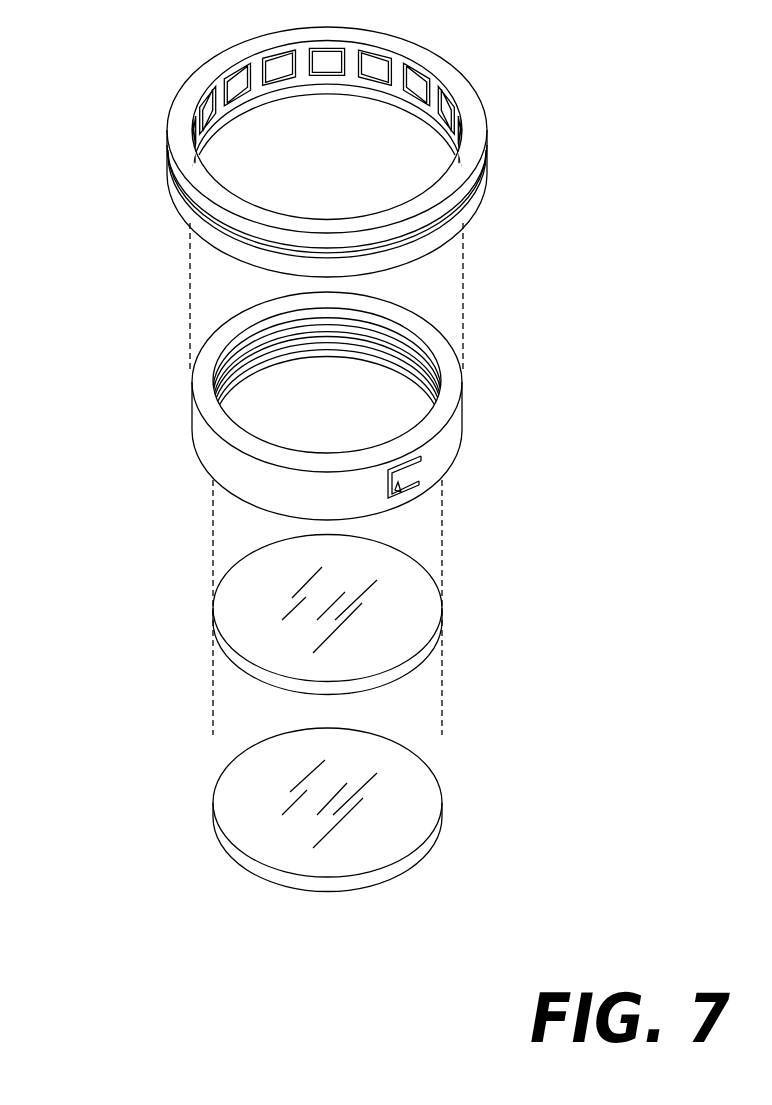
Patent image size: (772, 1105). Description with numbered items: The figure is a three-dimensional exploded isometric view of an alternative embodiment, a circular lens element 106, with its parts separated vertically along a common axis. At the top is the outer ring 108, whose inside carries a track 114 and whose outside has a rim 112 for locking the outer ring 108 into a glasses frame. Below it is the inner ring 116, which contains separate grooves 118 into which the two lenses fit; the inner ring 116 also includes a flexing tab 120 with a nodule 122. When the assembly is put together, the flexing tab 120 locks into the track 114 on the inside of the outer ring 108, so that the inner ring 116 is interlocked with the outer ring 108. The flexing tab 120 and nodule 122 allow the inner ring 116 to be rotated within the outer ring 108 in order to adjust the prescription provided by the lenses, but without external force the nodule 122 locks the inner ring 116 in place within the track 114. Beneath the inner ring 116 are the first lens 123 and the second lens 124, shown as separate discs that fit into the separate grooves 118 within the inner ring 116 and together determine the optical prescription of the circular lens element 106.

The circular lens element 106 is at (112, 88).
The outer ring 108 is at (458, 66).
The rim 112 is at (473, 167).
The track 114 is at (420, 88).
The inner ring 116 is at (465, 403).
The grooves 118 is at (380, 352).
The flexing tab 120 is at (405, 478).
The nodule 122 is at (387, 493).
The first lens 123 is at (410, 602).
The second lens 124 is at (410, 802).